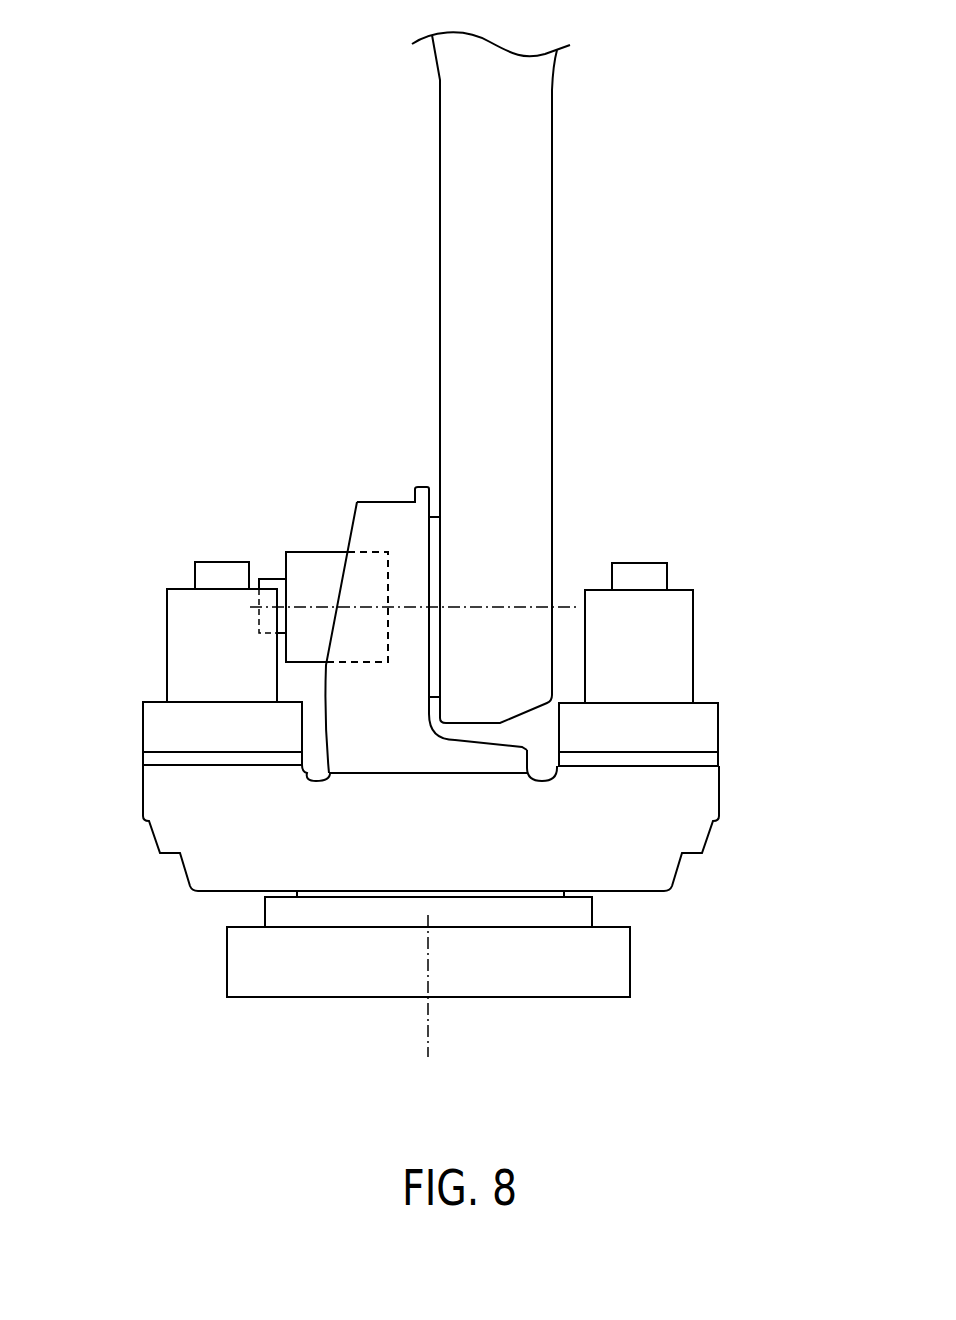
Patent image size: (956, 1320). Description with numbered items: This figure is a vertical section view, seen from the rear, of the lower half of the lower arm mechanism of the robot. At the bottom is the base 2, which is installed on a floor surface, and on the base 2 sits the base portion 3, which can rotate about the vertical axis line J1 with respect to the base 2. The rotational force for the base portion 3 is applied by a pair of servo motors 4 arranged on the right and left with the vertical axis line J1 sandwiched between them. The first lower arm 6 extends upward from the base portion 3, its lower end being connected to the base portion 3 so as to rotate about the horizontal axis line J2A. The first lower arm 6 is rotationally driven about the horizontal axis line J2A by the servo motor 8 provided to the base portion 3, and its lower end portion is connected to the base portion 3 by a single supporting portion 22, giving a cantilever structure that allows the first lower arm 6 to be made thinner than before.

The base 2 is at (228, 970).
The base portion 3 is at (703, 840).
The servo motor 4 is at (167, 600).
The first lower arm 6 is at (547, 262).
The servo motor 8 is at (300, 552).
The supporting portion 22 is at (381, 503).
The vertical axis line J1 is at (428, 1025).
The horizontal axis line J2A is at (567, 607).